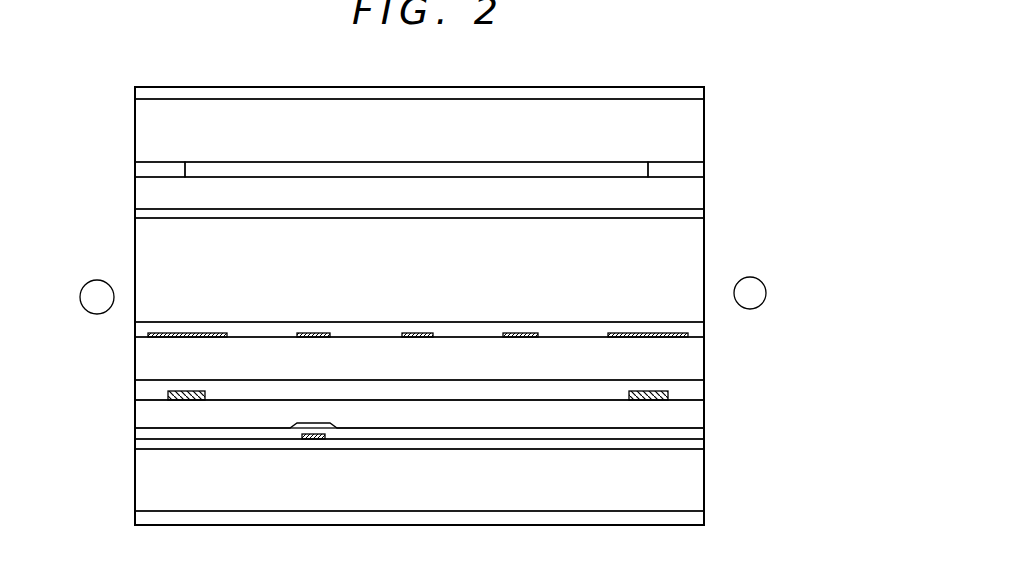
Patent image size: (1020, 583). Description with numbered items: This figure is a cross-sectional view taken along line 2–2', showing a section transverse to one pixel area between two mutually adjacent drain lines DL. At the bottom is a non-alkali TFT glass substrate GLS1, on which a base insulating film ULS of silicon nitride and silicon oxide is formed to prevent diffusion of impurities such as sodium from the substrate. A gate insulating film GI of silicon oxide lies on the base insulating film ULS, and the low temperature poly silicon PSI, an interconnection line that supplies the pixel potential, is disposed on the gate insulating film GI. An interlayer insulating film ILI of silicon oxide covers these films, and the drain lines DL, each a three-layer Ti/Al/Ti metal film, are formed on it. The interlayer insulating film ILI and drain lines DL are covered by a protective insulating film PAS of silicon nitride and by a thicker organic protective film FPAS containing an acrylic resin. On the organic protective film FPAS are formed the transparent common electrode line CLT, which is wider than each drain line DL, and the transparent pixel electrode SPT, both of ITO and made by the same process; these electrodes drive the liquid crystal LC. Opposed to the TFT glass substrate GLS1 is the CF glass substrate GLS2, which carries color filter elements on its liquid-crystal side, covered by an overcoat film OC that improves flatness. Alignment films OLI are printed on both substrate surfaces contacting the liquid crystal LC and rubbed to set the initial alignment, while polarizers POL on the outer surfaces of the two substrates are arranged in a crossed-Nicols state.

The polarizer POL is at (691, 93).
The CF glass substrate GLS2 is at (690, 121).
The overcoat film OC is at (691, 192).
The alignment film OLI is at (692, 214).
The liquid crystal LC is at (162, 250).
The transparent common electrode line CLT is at (160, 340).
The transparent pixel electrode SPT is at (310, 333).
The organic protective film FPAS is at (693, 355).
The protective insulating film PAS is at (695, 387).
The drain line DL is at (186, 403).
The interlayer insulating film ILI is at (695, 413).
The low temperature poly silicon PSI is at (313, 440).
The gate insulating film GI is at (700, 433).
The base insulating film ULS is at (700, 443).
The TFT glass substrate GLS1 is at (699, 487).
The section line 2–2' 2 is at (97, 297).
The section line 2– 2' is at (750, 293).